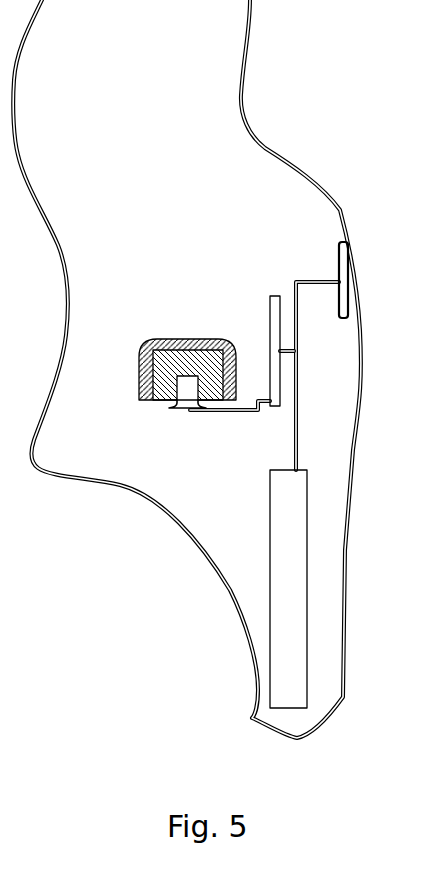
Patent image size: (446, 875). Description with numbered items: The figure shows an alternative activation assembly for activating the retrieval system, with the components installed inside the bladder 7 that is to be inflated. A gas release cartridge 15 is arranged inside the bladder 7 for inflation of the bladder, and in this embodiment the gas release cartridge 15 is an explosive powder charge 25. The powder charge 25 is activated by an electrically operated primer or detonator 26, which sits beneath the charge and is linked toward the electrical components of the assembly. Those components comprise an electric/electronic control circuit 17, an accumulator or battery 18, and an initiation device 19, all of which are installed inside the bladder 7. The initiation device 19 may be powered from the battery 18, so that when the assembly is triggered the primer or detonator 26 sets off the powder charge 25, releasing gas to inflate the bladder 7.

The bladder 7 is at (245, 97).
The gas release cartridge 15 is at (197, 340).
The electric/electronic control circuit 17 is at (276, 408).
The accumulator or battery 18 is at (270, 503).
The initiation device 19 is at (340, 262).
The explosive powder charge 25 is at (162, 356).
The electrically operated primer or detonator 26 is at (183, 406).